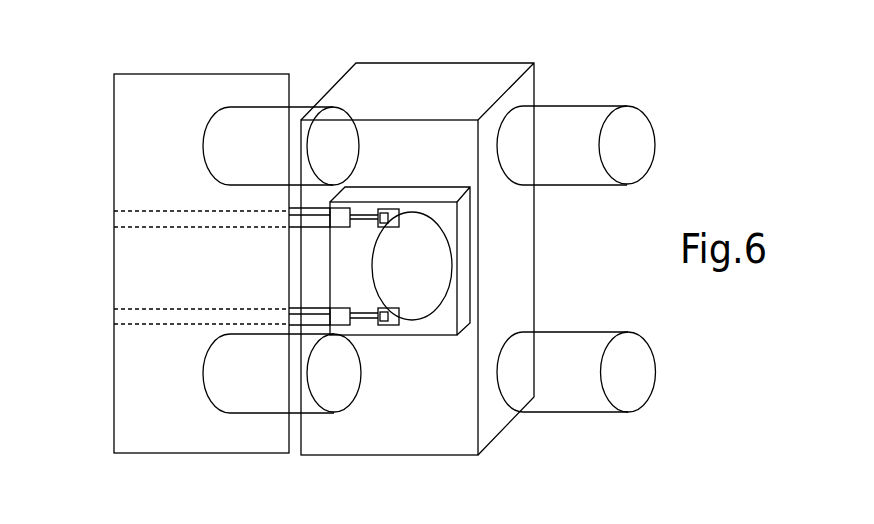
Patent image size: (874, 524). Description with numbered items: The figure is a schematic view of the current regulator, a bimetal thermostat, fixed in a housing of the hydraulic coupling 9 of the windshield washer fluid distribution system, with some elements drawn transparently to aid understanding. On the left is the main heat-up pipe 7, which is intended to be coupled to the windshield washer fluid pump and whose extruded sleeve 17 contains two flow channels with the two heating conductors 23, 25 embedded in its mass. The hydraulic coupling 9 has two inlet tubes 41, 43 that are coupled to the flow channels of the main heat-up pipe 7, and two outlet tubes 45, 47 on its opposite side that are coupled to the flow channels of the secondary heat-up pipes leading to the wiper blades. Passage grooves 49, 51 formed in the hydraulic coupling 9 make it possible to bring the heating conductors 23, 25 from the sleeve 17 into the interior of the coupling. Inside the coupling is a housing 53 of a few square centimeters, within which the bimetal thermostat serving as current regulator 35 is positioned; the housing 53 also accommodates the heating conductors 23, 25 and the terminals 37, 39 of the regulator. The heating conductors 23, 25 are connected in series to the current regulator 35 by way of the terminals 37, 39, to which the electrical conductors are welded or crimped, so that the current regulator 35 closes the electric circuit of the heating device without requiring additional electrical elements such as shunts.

The main heat-up pipe 7 is at (166, 236).
The hydraulic coupling 9 is at (509, 42).
The extruded sleeve 17 is at (128, 107).
The heating conductor 23 is at (340, 217).
The heating conductor 25 is at (342, 317).
The current regulator 35 is at (435, 262).
The terminal 37 is at (390, 213).
The terminal 39 is at (388, 320).
The inlet tube 41 is at (267, 122).
The inlet tube 43 is at (265, 402).
The outlet tube 45 is at (582, 125).
The outlet tube 47 is at (578, 393).
The passage groove 49 is at (313, 207).
The passage groove 51 is at (322, 338).
The housing 53 is at (465, 222).